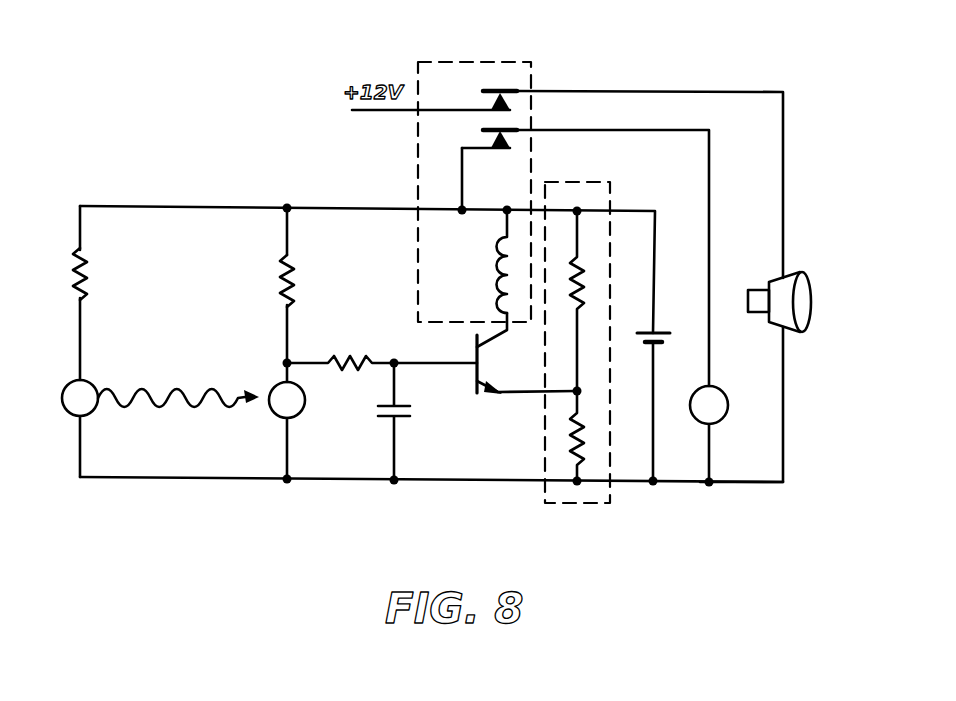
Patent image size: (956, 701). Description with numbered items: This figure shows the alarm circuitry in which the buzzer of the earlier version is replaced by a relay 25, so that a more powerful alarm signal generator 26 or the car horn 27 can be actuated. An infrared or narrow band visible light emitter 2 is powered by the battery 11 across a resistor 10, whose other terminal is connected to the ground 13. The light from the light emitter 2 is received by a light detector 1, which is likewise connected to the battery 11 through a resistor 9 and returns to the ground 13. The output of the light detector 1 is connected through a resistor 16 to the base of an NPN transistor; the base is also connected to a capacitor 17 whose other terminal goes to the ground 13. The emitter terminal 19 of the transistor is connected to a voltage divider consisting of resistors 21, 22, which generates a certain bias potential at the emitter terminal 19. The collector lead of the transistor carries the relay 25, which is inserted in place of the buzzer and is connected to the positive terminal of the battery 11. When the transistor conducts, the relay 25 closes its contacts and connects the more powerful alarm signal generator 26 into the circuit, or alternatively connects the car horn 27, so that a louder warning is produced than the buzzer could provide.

The light detector 1 is at (275, 416).
The light emitter 2 is at (96, 386).
The resistor 9 is at (283, 283).
The resistor 10 is at (77, 272).
The battery 11 is at (662, 332).
The ground 13 is at (753, 483).
The resistor 16 is at (338, 356).
The capacitor 17 is at (386, 420).
The emitter terminal 19 is at (489, 396).
The resistor 21 is at (580, 287).
The resistor 22 is at (575, 456).
The relay 25 is at (488, 61).
The alarm signal generator 26 is at (728, 405).
The car horn 27 is at (788, 322).